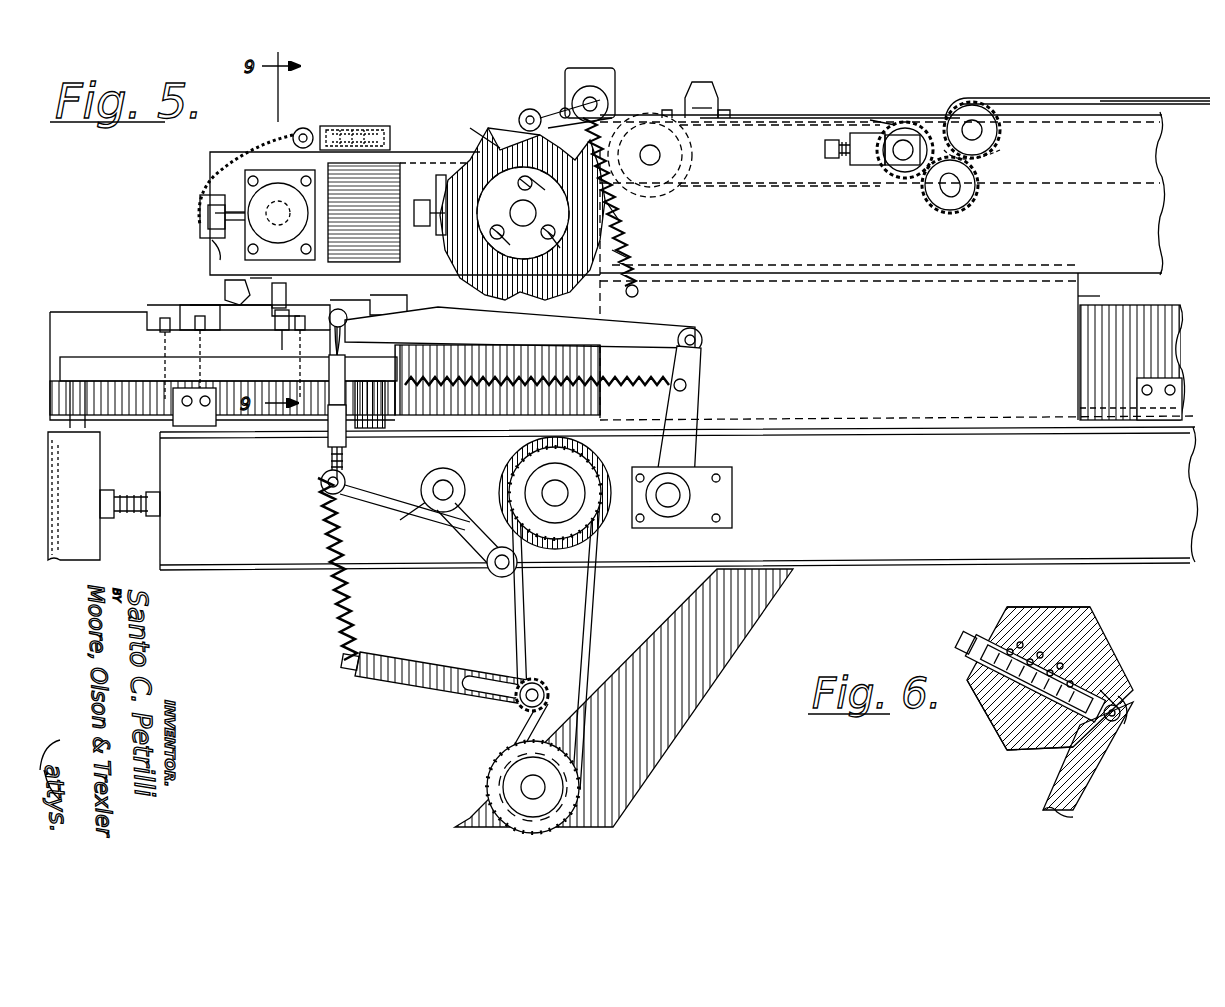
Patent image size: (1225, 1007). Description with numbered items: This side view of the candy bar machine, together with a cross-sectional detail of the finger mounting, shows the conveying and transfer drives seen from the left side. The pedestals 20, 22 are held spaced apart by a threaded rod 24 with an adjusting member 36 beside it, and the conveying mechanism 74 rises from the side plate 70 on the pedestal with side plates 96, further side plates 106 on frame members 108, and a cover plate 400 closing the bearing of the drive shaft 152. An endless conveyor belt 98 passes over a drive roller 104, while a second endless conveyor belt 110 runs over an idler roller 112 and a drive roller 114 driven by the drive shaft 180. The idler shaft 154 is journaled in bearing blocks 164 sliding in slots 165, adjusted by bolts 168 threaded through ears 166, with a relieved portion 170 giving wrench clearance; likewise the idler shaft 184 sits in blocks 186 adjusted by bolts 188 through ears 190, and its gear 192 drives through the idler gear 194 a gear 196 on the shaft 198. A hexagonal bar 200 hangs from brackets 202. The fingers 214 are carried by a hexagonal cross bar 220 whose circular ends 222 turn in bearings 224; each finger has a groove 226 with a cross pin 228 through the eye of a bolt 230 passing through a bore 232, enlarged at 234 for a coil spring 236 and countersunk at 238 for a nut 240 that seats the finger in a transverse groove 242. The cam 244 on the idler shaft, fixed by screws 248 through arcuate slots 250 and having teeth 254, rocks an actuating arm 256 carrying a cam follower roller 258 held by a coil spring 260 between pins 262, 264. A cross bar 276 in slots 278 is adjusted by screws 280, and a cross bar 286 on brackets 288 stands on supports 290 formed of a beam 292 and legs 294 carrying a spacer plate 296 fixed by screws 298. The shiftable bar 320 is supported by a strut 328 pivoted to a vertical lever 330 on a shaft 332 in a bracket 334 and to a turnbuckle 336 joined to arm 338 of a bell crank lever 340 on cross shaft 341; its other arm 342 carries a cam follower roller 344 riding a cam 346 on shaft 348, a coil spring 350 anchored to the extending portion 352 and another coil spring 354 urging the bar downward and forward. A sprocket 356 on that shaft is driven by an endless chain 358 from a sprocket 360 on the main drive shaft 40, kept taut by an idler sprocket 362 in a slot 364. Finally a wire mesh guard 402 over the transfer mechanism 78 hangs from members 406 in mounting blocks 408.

In FIG. 5, the pedestal 20 is at (822, 578).
In FIG. 5, the pedestal 22 is at (122, 570).
In FIG. 5, the threaded rod 24 is at (140, 520).
In FIG. 5, the adjusting bolt 36 is at (140, 482).
In FIG. 5, the main drive shaft 40 is at (545, 795).
In FIG. 5, the side plate 70 is at (66, 325).
In FIG. 5, the conveying mechanism 74 is at (1093, 96).
In FIG. 5, the transfer mechanism 78 is at (212, 284).
In FIG. 5, the side plate 96 is at (1140, 195).
In FIG. 5, the endless conveyor belt 98 is at (1180, 96).
In FIG. 5, the drive roller 104 is at (978, 100).
In FIG. 5, the side plate 106 is at (828, 265).
In FIG. 5, the frame member 108 is at (1058, 296).
In FIG. 5, the second endless conveyor belt 110 is at (808, 118).
In FIG. 5, the idler roller 112 is at (896, 122).
In FIG. 5, the drive roller 114 is at (745, 146).
In FIG. 5, the drive shaft 152 is at (320, 207).
In FIG. 5, the idler shaft 154 is at (518, 203).
In FIG. 5, the bearing block 164 is at (618, 222).
In FIG. 5, the slot 165 is at (628, 258).
In FIG. 5, the ear 166 is at (436, 175).
In FIG. 5, the bolt 168 is at (417, 200).
In FIG. 5, the relieved portion 170 is at (384, 180).
In FIG. 5, the drive shaft 180 is at (660, 155).
In FIG. 5, the idler shaft 184 is at (905, 160).
In FIG. 5, the block 186 is at (910, 128).
In FIG. 5, the bolt 188 is at (825, 150).
In FIG. 5, the ear 190 is at (860, 135).
In FIG. 5, the gear 192 is at (895, 172).
In FIG. 5, the idler gear 194 is at (968, 212).
In FIG. 5, the gear 196 is at (1000, 150).
In FIG. 5, the shaft 198 is at (984, 130).
In FIG. 5, the hexagonal bar 200 is at (710, 82).
In FIG. 5, the depending bracket 202 is at (720, 105).
In FIG. 6, the finger 214 is at (1082, 790).
In FIG. 6, the hexagonal cross bar 220 is at (1090, 645).
In FIG. 5, the circular end 222 is at (597, 105).
In FIG. 5, the bearing 224 is at (600, 88).
In FIG. 6, the groove 226 is at (1114, 703).
In FIG. 6, the cross pin 228 is at (1112, 728).
In FIG. 6, the bolt 230 is at (1000, 712).
In FIG. 6, the bore 232 is at (1040, 750).
In FIG. 6, the enlarged bore portion 234 is at (1075, 640).
In FIG. 6, the coil spring 236 is at (1055, 665).
In FIG. 6, the countersink 238 is at (1032, 606).
In FIG. 6, the nut 240 is at (985, 630).
In FIG. 6, the transverse groove 242 is at (1105, 680).
In FIG. 5, the cam 244 is at (540, 135).
In FIG. 5, the screw 248 is at (522, 214).
In FIG. 5, the arcuate slot 250 is at (590, 185).
In FIG. 5, the actuating lug 254 is at (488, 130).
In FIG. 5, the actuating arm 256 is at (560, 110).
In FIG. 5, the cam follower roller 258 is at (528, 108).
In FIG. 5, the coil spring 260 is at (622, 238).
In FIG. 5, the pin 262 is at (566, 108).
In FIG. 5, the pin 264 is at (640, 293).
In FIG. 5, the cross bar 276 is at (205, 232).
In FIG. 5, the slot 278 is at (205, 200).
In FIG. 5, the screw 280 is at (212, 245).
In FIG. 5, the cross bar 286 is at (285, 288).
In FIG. 5, the bracket 288 is at (272, 323).
In FIG. 5, the support 290 is at (145, 338).
In FIG. 5, the horizontal beam 292 is at (115, 370).
In FIG. 5, the leg 294 is at (78, 432).
In FIG. 5, the spacer plate 296 is at (222, 352).
In FIG. 5, the screw 298 is at (165, 320).
In FIG. 5, the shiftable bar 320 is at (440, 322).
In FIG. 5, the shiftable strut 328 is at (670, 330).
In FIG. 5, the vertical lever 330 is at (688, 400).
In FIG. 5, the shaft 332 is at (680, 500).
In FIG. 5, the bracket 334 is at (722, 482).
In FIG. 5, the turnbuckle 336 is at (330, 370).
In FIG. 5, the bell crank arm 338 is at (370, 500).
In FIG. 5, the bell crank lever 340 is at (418, 520).
In FIG. 5, the cross shaft 341 is at (443, 488).
In FIG. 5, the bell crank arm 342 is at (470, 540).
In FIG. 5, the cam follower roller 344 is at (500, 572).
In FIG. 5, the cam 346 is at (595, 535).
In FIG. 5, the shaft 348 is at (550, 490).
In FIG. 5, the coil spring 350 is at (350, 628).
In FIG. 5, the extending portion 352 is at (390, 690).
In FIG. 5, the coil spring 354 is at (512, 384).
In FIG. 5, the sprocket 356 is at (563, 548).
In FIG. 5, the endless chain 358 is at (598, 585).
In FIG. 5, the sprocket 360 is at (565, 778).
In FIG. 5, the idler sprocket 362 is at (522, 708).
In FIG. 5, the slot 364 is at (480, 698).
In FIG. 5, the cover plate 400 is at (300, 228).
In FIG. 5, the guard 402 is at (262, 132).
In FIG. 5, the member 406 is at (303, 128).
In FIG. 5, the mounting block 408 is at (392, 122).